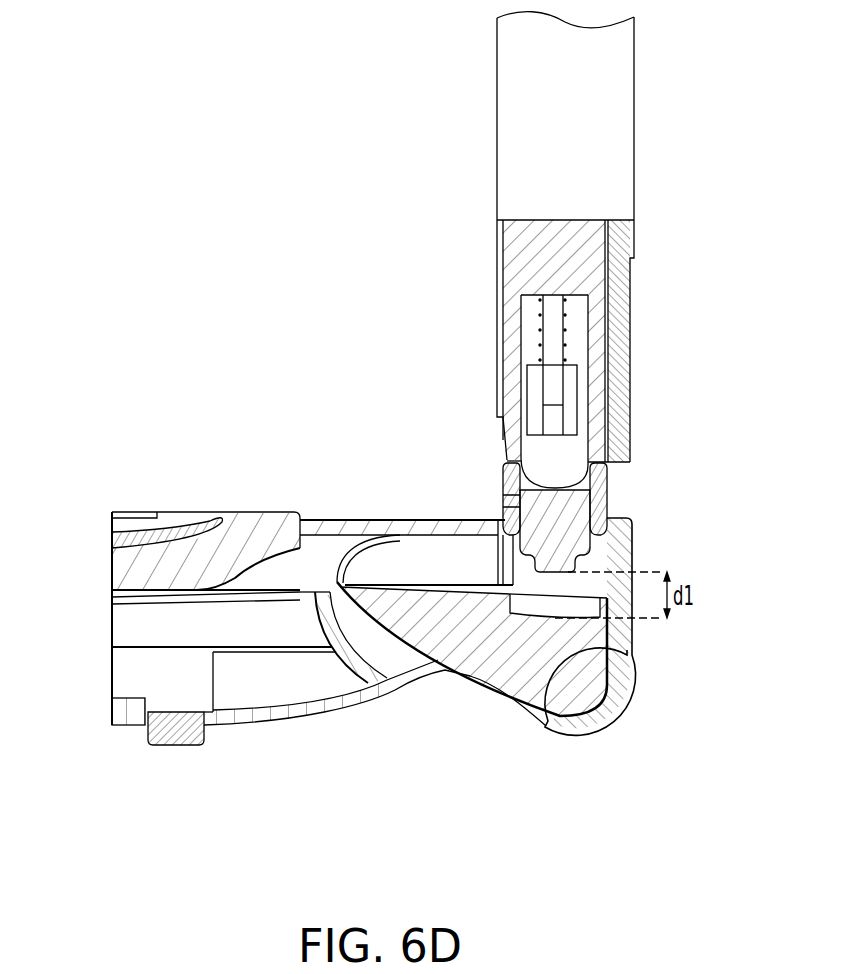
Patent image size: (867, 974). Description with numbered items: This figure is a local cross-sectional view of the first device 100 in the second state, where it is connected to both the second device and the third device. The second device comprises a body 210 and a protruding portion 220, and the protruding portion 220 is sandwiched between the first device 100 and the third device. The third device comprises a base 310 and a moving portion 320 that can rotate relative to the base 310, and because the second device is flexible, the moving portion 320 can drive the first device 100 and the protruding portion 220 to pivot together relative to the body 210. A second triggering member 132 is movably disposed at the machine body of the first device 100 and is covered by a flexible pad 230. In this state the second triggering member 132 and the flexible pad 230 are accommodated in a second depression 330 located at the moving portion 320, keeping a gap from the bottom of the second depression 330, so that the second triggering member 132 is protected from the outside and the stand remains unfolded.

The first device 100 is at (618, 132).
The second triggering member 132 is at (540, 447).
The body 210 is at (142, 570).
The protruding portion 220 is at (348, 528).
The flexible pad 230 is at (570, 512).
The base 310 is at (273, 688).
The moving portion 320 is at (617, 683).
The second depression 330 is at (533, 612).